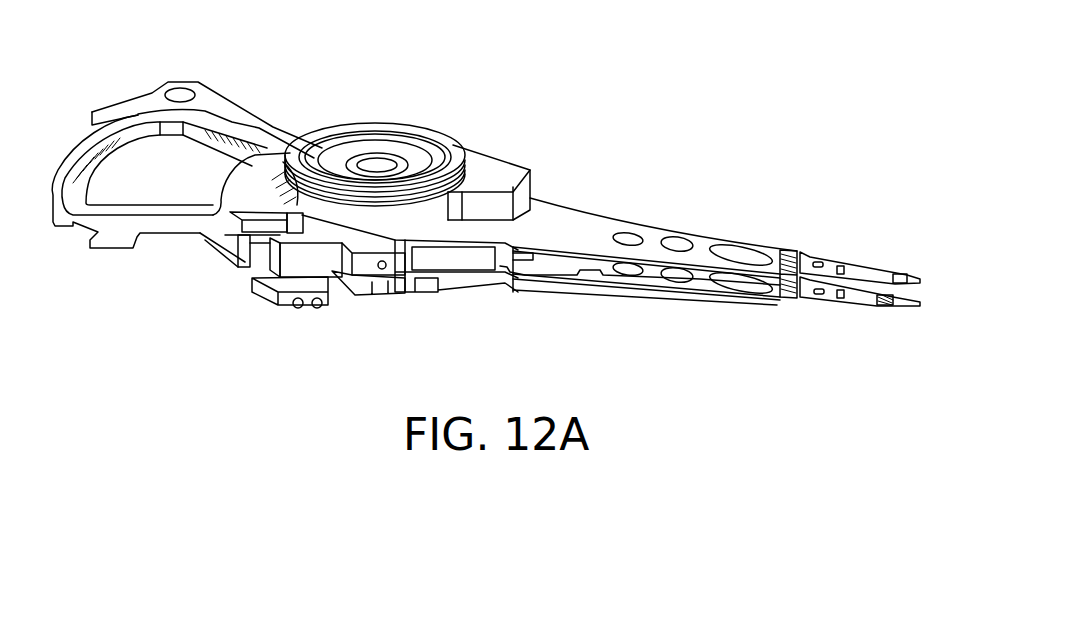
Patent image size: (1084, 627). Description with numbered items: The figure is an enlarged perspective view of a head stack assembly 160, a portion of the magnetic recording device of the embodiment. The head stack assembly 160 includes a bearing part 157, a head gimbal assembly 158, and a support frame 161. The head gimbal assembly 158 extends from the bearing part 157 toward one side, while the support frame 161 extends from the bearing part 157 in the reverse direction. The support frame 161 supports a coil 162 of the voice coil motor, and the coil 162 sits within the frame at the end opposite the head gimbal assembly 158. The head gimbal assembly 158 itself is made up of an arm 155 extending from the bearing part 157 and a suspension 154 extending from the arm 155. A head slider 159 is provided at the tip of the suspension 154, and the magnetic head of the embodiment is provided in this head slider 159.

The suspension 154 is at (857, 270).
The arm 155 is at (703, 245).
The bearing part 157 is at (393, 100).
The head gimbal assembly 158 is at (631, 200).
The head slider 159 is at (893, 278).
The head stack assembly 160 is at (594, 121).
The support frame 161 is at (214, 104).
The coil 162 is at (140, 202).